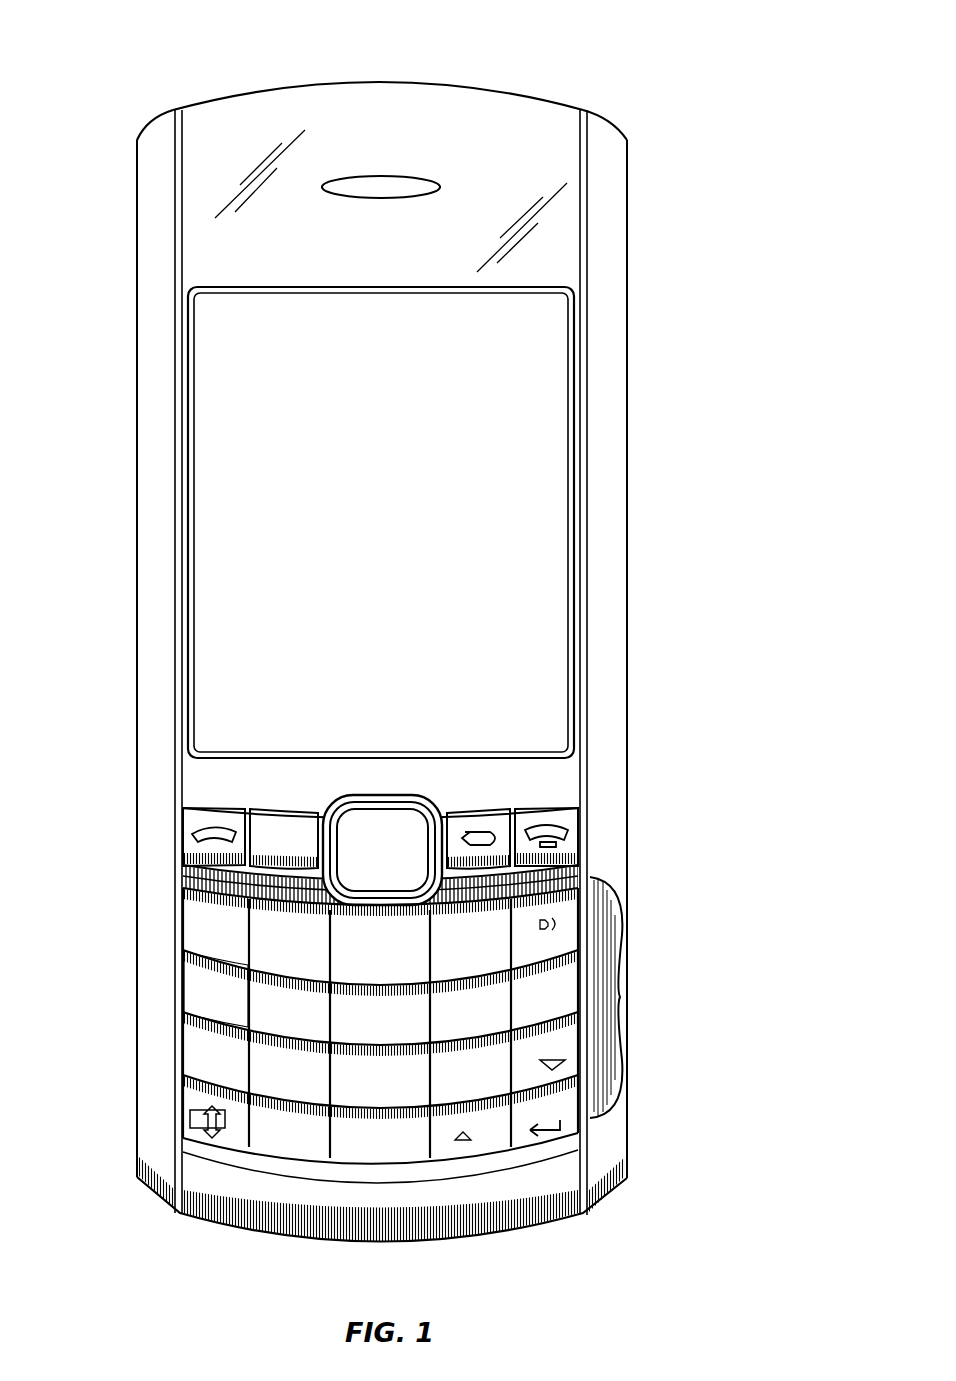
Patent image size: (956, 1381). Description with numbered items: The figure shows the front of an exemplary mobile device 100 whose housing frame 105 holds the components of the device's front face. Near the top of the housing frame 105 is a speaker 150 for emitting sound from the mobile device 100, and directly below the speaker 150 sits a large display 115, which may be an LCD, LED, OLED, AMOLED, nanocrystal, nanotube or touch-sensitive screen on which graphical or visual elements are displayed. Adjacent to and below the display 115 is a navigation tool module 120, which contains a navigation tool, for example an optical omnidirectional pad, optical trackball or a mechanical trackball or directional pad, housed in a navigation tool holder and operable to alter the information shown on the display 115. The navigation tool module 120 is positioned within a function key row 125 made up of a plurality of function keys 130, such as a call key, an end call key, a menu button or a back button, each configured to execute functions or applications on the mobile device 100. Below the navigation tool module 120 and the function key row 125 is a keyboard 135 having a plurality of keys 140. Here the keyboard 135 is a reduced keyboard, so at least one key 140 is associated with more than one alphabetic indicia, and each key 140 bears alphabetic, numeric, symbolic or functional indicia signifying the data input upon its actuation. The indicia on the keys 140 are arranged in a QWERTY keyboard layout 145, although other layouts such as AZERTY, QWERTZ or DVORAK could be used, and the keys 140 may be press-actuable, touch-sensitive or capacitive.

The mobile device 100 is at (126, 36).
The housing frame 105 is at (137, 195).
The display 115 is at (250, 473).
The navigation tool module 120 is at (380, 845).
The function key row 125 is at (186, 830).
The function keys 130 is at (553, 818).
The keyboard 135 is at (196, 977).
The keys 140 is at (186, 913).
The keyboard layout 145 is at (620, 997).
The speaker 150 is at (403, 177).